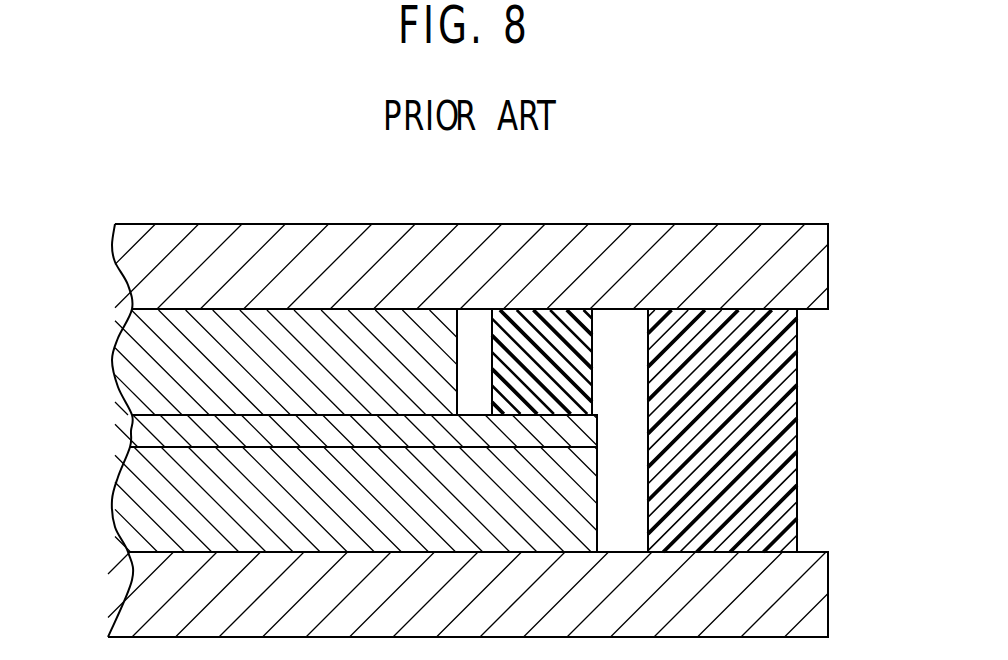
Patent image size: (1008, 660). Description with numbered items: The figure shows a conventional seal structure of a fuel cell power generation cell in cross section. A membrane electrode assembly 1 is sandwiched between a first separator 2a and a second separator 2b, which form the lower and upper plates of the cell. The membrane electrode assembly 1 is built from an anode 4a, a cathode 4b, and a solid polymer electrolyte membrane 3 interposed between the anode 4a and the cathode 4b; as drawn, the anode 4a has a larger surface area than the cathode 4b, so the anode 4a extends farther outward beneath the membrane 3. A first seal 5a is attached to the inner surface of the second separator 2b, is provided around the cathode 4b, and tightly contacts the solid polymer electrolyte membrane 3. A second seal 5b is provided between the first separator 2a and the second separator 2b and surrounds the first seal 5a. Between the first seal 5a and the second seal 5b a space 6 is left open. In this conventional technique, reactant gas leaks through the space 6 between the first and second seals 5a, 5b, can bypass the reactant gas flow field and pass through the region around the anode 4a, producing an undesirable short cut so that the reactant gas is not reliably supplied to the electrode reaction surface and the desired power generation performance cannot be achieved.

The membrane electrode assembly 1 is at (288, 388).
The first separator 2a is at (147, 590).
The second separator 2b is at (153, 278).
The solid polymer electrolyte membrane 3 is at (140, 435).
The anode 4a is at (150, 517).
The cathode 4b is at (153, 355).
The first seal 5a is at (532, 322).
The second seal 5b is at (733, 337).
The gap / space 6 is at (622, 381).